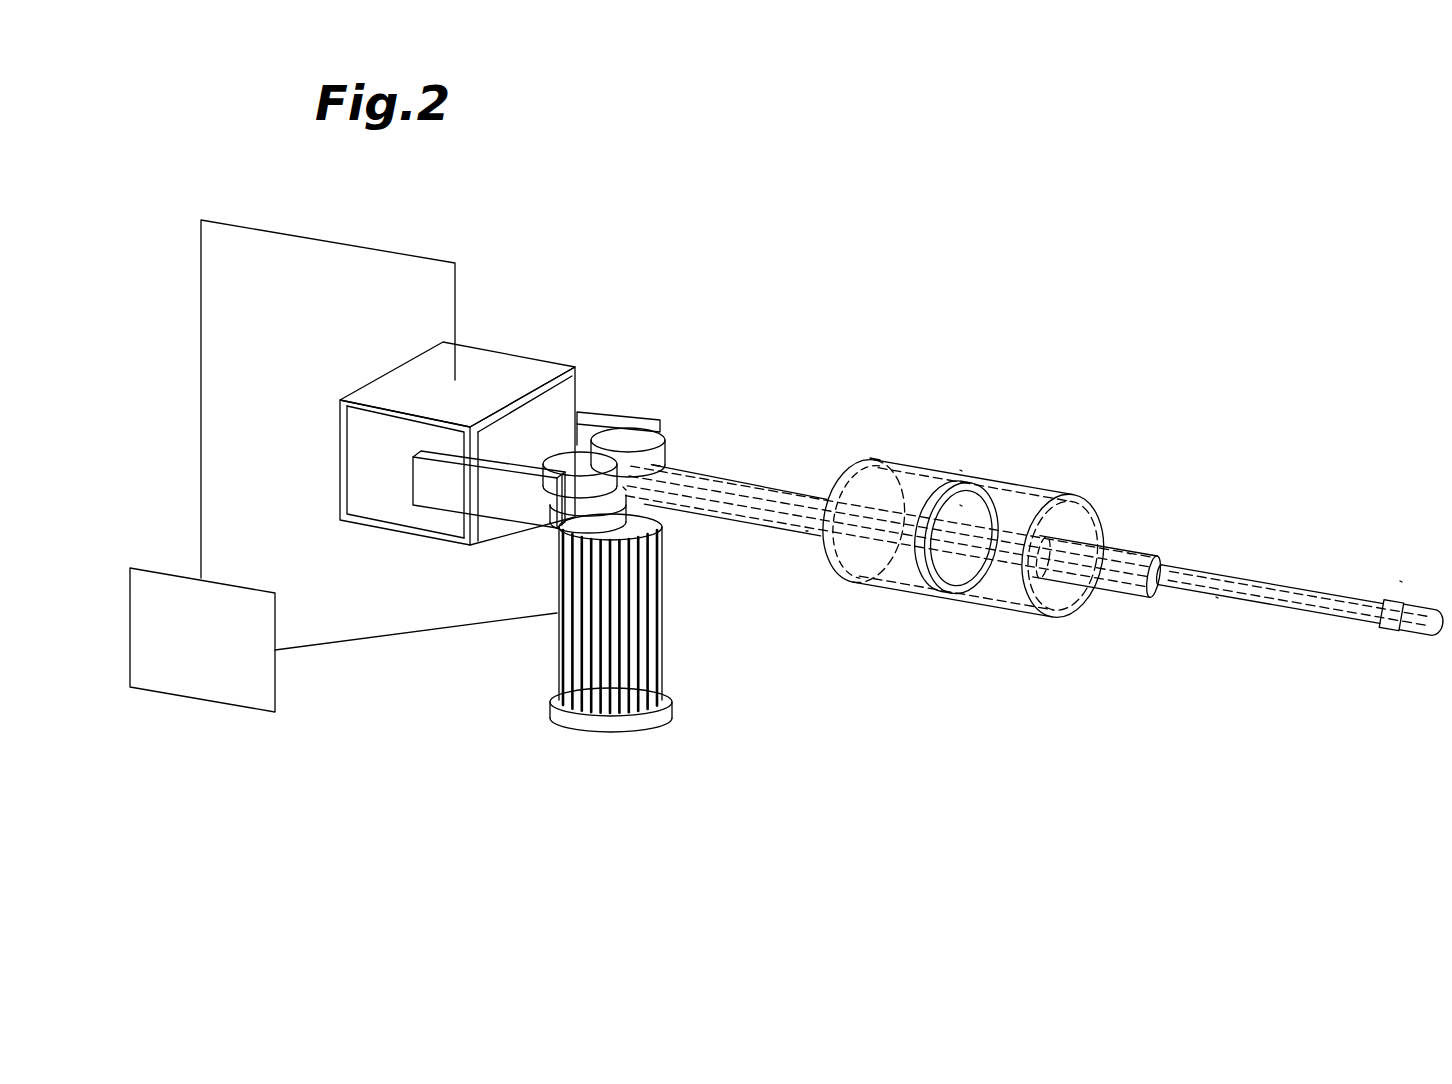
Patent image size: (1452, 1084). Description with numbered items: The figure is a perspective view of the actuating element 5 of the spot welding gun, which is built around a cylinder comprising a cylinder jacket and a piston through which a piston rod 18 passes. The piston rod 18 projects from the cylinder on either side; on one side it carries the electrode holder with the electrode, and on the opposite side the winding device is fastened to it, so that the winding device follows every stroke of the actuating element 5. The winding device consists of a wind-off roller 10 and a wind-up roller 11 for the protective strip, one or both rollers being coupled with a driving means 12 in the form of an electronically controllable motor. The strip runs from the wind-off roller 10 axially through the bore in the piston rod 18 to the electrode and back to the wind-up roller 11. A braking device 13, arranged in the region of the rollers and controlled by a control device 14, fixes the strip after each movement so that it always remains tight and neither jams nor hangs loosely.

The actuating element 5 is at (1035, 499).
The wind-off roller 10 is at (630, 440).
The wind-up roller 11 is at (583, 462).
The driving means 12 is at (587, 722).
The braking device 13 is at (490, 380).
The control device 14 is at (202, 647).
The piston rod 18 is at (808, 530).